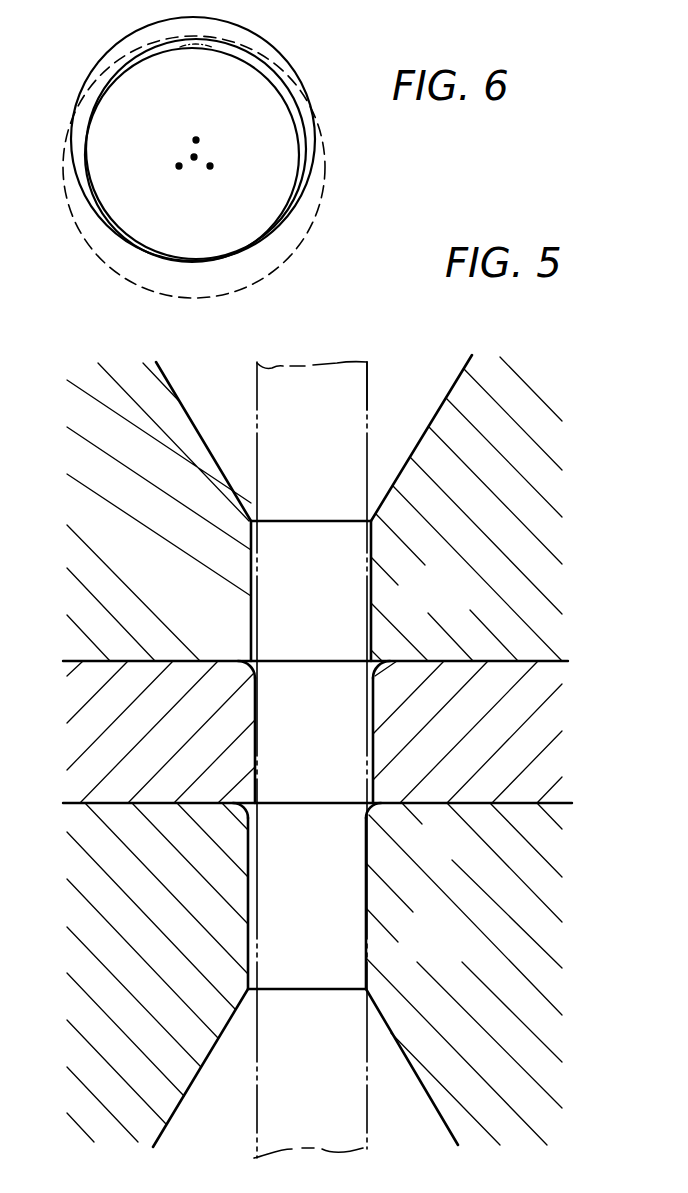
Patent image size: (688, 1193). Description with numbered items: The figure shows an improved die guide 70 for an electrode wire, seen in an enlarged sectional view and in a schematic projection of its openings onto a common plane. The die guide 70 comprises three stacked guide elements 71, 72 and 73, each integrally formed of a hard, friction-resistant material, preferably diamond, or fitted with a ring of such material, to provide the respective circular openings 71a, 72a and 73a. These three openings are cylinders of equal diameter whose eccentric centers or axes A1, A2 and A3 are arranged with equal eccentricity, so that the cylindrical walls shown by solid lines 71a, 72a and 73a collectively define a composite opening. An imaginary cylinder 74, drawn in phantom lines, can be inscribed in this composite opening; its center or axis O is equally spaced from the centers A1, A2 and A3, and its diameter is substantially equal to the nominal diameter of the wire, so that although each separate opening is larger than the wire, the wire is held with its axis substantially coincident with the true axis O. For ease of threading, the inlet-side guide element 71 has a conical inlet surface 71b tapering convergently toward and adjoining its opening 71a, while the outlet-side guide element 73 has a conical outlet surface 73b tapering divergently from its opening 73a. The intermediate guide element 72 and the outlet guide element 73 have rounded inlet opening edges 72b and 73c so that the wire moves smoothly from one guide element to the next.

In FIG. 6, the die guide 70 is at (86, 51).
In FIG. 5, the die guide 70 is at (343, 350).
In FIG. 5, the guide element 71 is at (522, 512).
In FIG. 6, the circular opening 71a is at (264, 36).
In FIG. 5, the circular opening 71a is at (373, 600).
In FIG. 5, the conical inlet surface 71b is at (428, 428).
In FIG. 5, the intermediate guide element 72 is at (532, 732).
In FIG. 6, the circular opening 72a is at (281, 60).
In FIG. 5, the circular opening 72a is at (374, 778).
In FIG. 5, the rounded inlet opening edge 72b is at (382, 668).
In FIG. 5, the outlet guide element 73 is at (517, 902).
In FIG. 6, the circular opening 73a is at (298, 163).
In FIG. 5, the circular opening 73a is at (367, 947).
In FIG. 5, the conical outlet surface 73b is at (418, 1080).
In FIG. 5, the rounded inlet opening edge 73c is at (370, 810).
In FIG. 6, the imaginary cylinder 74 is at (102, 208).
In FIG. 5, the imaginary cylinder 74 is at (370, 375).
In FIG. 6, the center of opening 71a A1 is at (196, 140).
In FIG. 6, the center of opening 72a A2 is at (210, 166).
In FIG. 6, the center of opening 73a A3 is at (179, 166).
In FIG. 6, the center or axis of imaginary cylinder O is at (194, 157).